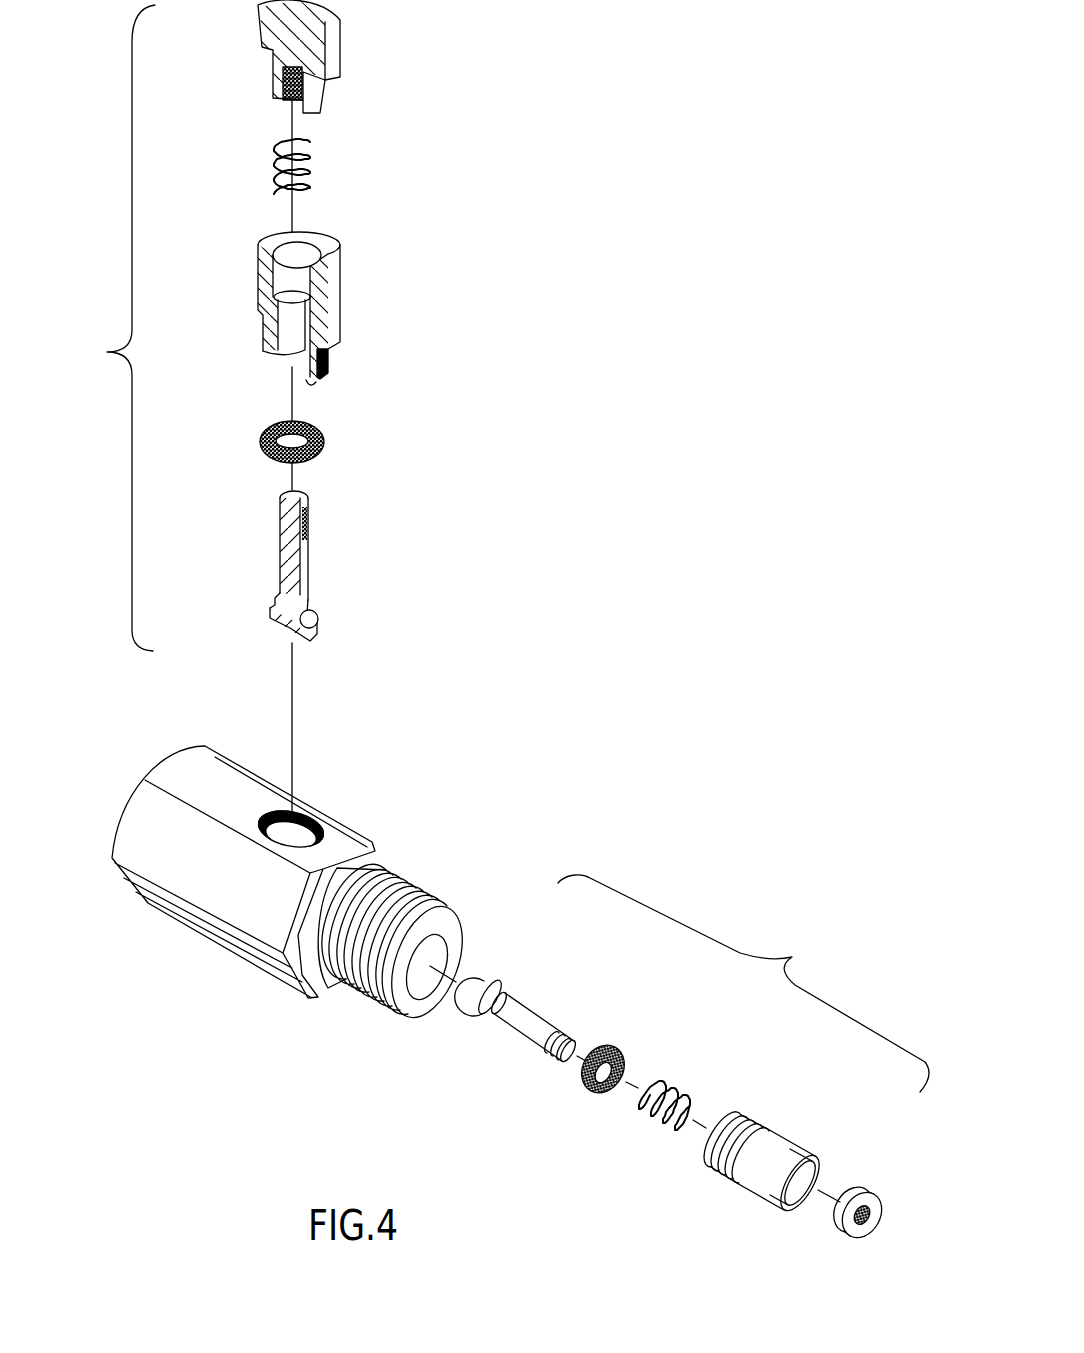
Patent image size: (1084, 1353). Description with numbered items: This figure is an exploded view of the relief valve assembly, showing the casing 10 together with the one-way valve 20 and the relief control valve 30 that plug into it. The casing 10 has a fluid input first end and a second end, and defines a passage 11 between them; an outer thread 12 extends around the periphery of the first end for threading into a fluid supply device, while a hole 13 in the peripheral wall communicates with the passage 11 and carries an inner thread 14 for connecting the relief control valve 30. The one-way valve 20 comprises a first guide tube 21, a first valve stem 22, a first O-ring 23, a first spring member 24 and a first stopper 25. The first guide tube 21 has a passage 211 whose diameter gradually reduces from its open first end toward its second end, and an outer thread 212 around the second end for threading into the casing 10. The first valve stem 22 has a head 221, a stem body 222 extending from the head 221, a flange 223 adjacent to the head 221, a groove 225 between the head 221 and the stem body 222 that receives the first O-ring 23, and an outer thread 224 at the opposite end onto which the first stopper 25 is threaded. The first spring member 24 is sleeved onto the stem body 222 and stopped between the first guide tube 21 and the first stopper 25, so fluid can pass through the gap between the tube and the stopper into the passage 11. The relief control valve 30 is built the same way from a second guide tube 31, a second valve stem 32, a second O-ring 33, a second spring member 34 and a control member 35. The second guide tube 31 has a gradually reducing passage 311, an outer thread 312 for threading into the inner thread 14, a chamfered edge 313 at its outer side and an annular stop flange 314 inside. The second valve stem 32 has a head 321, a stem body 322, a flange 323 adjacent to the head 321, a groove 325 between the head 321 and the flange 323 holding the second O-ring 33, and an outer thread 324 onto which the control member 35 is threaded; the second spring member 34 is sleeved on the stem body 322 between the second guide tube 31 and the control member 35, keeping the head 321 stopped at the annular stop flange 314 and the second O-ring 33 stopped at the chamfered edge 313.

The casing 10 is at (309, 904).
The passage 11 is at (418, 988).
The outer thread 12 is at (420, 898).
The hole 13 is at (297, 840).
The inner thread 14 is at (273, 812).
The one-way valve 20 is at (743, 983).
The first guide tube 21 is at (798, 1171).
The passage 211 is at (795, 1218).
The outer thread 212 is at (738, 1108).
The first valve stem 22 is at (493, 1040).
The head 221 is at (482, 977).
The stem body 222 is at (520, 1027).
The flange 223 is at (503, 995).
The outer thread 224 is at (531, 1078).
The groove 225 is at (502, 992).
The first O-ring 23 is at (590, 1092).
The first spring member 24 is at (665, 1123).
The first stopper 25 is at (862, 1195).
The relief control valve 30 is at (110, 328).
The second guide tube 31 is at (336, 320).
The passage 311 is at (282, 277).
The outer thread 312 is at (330, 357).
The chamfered edge 313 is at (314, 386).
The annular stop flange 314 is at (275, 348).
The second valve stem 32 is at (309, 564).
The head 321 is at (282, 620).
The stem body 322 is at (282, 542).
The flange 323 is at (280, 593).
The outer thread 324 is at (280, 505).
The groove 325 is at (312, 618).
The second O-ring 33 is at (257, 440).
The second spring member 34 is at (308, 163).
The control member 35 is at (330, 58).